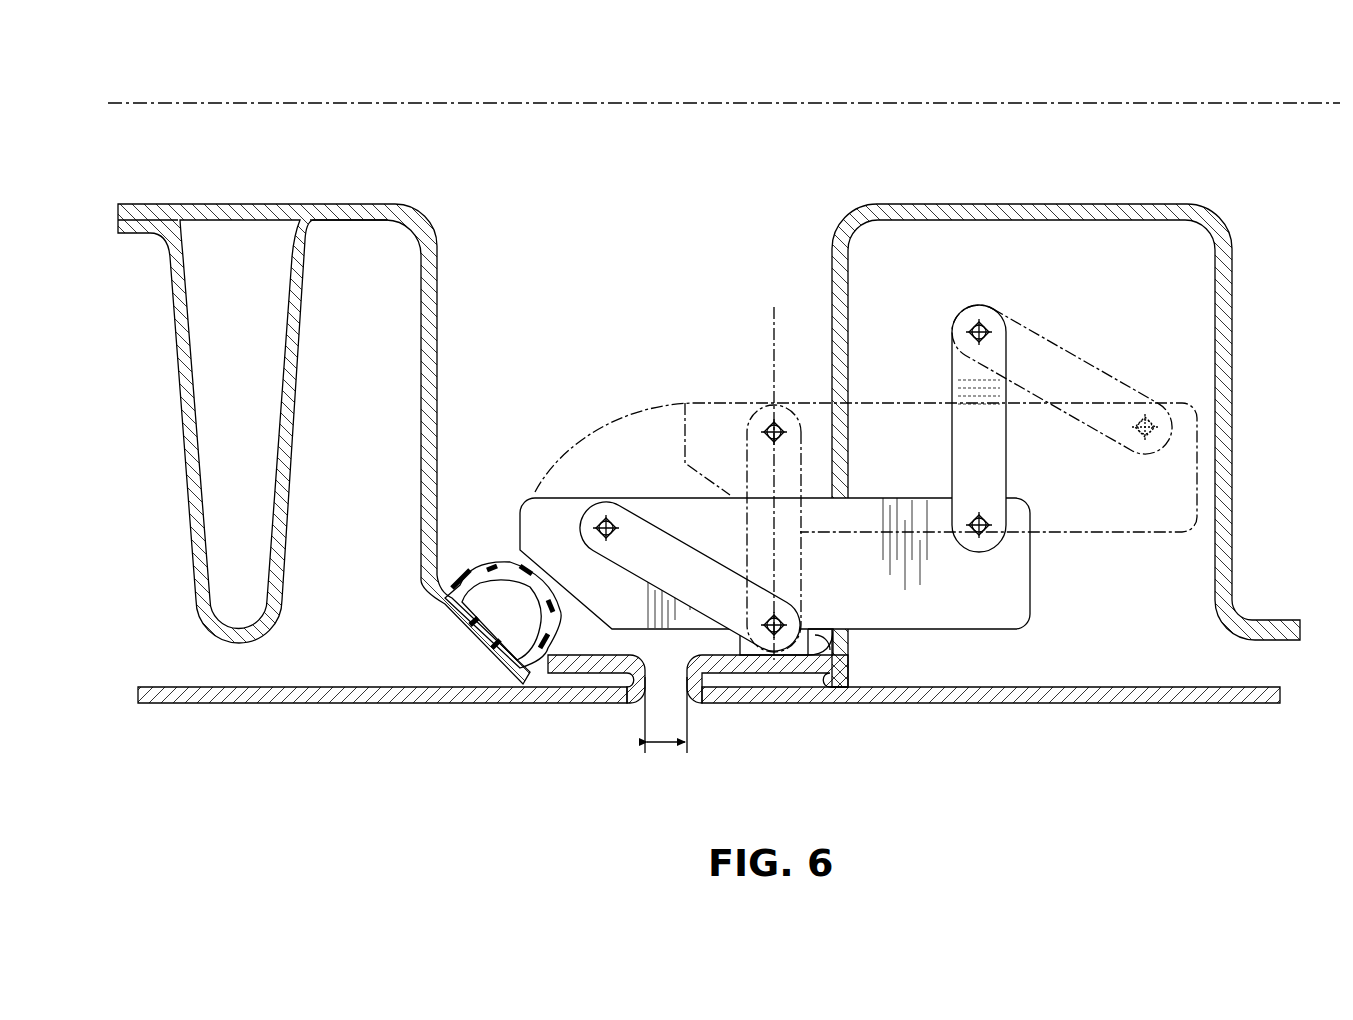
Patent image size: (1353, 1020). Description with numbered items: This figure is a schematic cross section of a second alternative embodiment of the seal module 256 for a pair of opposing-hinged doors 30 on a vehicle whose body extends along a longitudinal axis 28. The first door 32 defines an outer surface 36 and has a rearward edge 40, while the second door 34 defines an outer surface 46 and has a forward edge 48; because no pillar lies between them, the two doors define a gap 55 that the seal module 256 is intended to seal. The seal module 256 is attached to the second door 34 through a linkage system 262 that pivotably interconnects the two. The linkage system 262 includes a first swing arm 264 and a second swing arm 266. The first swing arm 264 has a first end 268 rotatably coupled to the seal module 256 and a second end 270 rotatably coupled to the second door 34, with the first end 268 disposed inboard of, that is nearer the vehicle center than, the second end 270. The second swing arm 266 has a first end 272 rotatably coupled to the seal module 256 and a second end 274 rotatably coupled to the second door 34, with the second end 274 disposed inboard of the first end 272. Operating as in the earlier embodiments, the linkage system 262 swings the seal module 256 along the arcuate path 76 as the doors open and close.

The longitudinal axis 28 is at (885, 100).
The opposing-hinged doors 30 is at (718, 733).
The first door 32 is at (195, 703).
The second door 34 is at (1003, 705).
The outer surface 36 is at (380, 703).
The rearward edge 40 is at (660, 678).
The outer surface 46 is at (1152, 705).
The forward edge 48 is at (684, 678).
The gap 55 is at (666, 745).
The arcuate path 76 is at (590, 425).
The seal module 256 is at (676, 316).
The linkage system 262 is at (888, 316).
The first swing arm 264 is at (667, 540).
The second swing arm 266 is at (1007, 428).
The first end of the first swing arm 268 is at (578, 498).
The second end of the first swing arm 270 is at (846, 650).
The first end of the second swing arm 272 is at (985, 548).
The second end of the second swing arm 274 is at (983, 318).